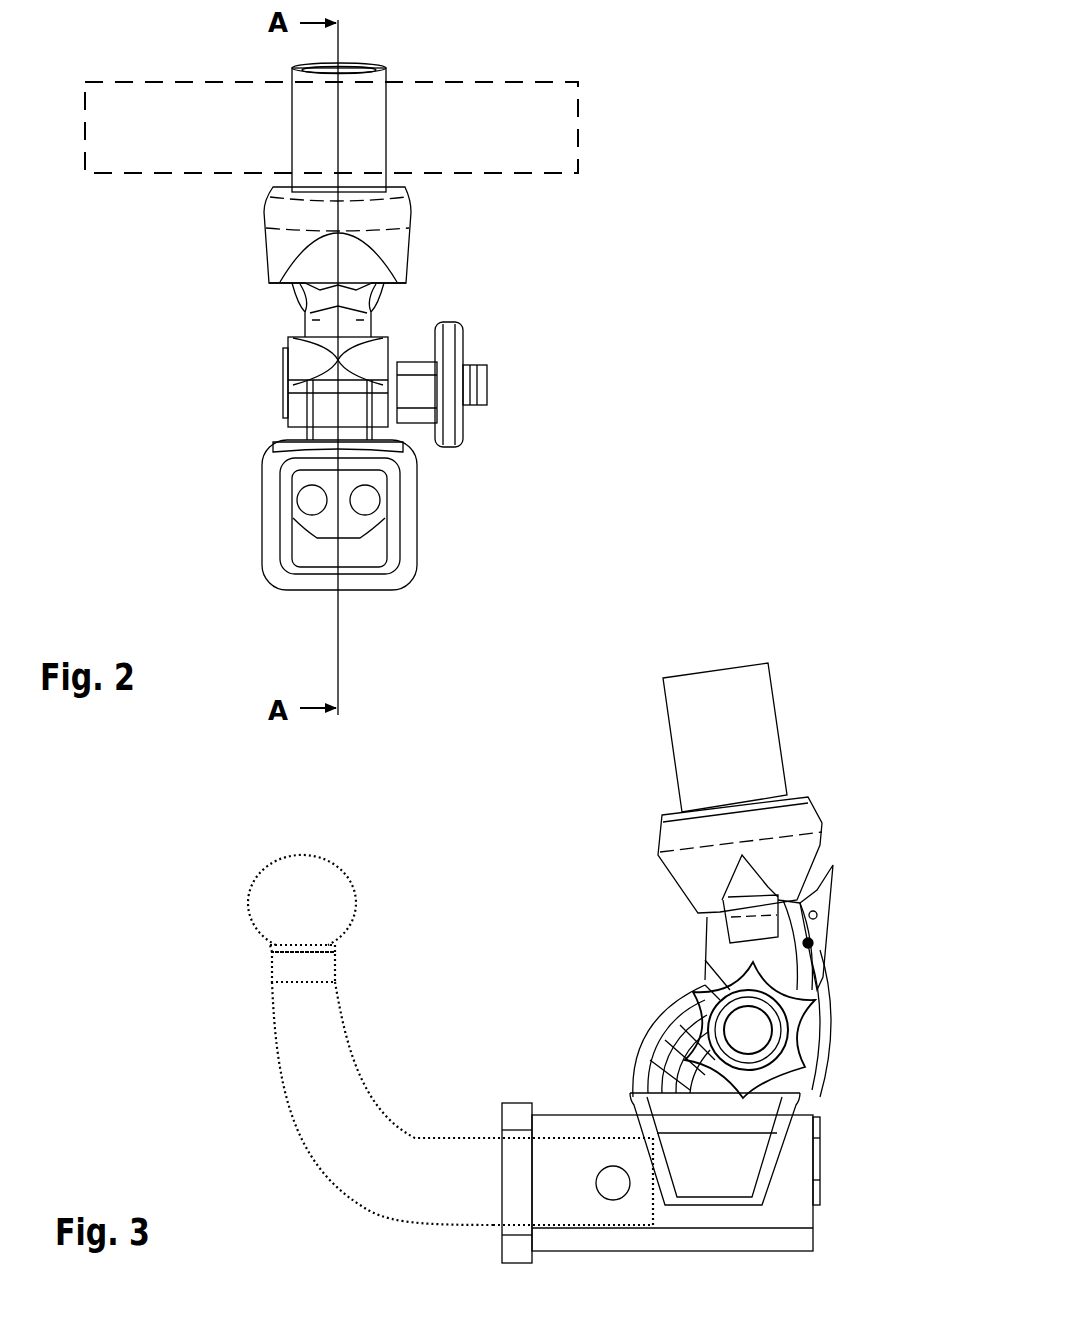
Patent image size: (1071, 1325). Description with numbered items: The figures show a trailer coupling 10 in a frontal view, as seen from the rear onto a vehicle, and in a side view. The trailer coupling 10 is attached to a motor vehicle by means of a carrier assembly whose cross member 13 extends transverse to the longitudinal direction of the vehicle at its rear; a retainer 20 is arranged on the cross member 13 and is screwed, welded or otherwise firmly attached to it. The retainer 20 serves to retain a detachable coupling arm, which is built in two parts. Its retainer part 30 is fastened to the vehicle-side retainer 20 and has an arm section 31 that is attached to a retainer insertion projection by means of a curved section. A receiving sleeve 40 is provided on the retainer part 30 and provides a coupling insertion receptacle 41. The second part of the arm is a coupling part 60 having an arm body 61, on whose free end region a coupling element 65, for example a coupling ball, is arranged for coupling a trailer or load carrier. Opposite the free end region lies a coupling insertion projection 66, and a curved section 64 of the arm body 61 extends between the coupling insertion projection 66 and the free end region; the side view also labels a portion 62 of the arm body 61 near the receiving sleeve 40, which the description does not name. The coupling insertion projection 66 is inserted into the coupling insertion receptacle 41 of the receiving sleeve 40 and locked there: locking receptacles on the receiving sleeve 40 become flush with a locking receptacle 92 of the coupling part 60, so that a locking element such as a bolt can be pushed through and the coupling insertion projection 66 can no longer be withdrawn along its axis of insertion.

In FIG. 2, the trailer coupling 10 is at (770, 185).
In FIG. 2, the cross member 13 is at (573, 102).
In FIG. 2, the retainer 20 is at (414, 238).
In FIG. 3, the retainer 20 is at (786, 690).
In FIG. 3, the retainer part 30 is at (680, 1022).
In FIG. 3, the arm section 31 is at (653, 1060).
In FIG. 2, the receiving sleeve 40 is at (416, 543).
In FIG. 2, the coupling insertion receptacle 41 is at (298, 542).
In FIG. 3, the coupling part 60 is at (357, 895).
In FIG. 3, the arm body 61 is at (383, 1193).
In FIG. 3, the upper shank portion 62 is at (408, 1150).
In FIG. 3, the curved section 64 is at (300, 1083).
In FIG. 3, the coupling element 65 is at (267, 902).
In FIG. 3, the coupling insertion projection 66 is at (602, 1215).
In FIG. 3, the locking receptacle 92 is at (612, 1175).